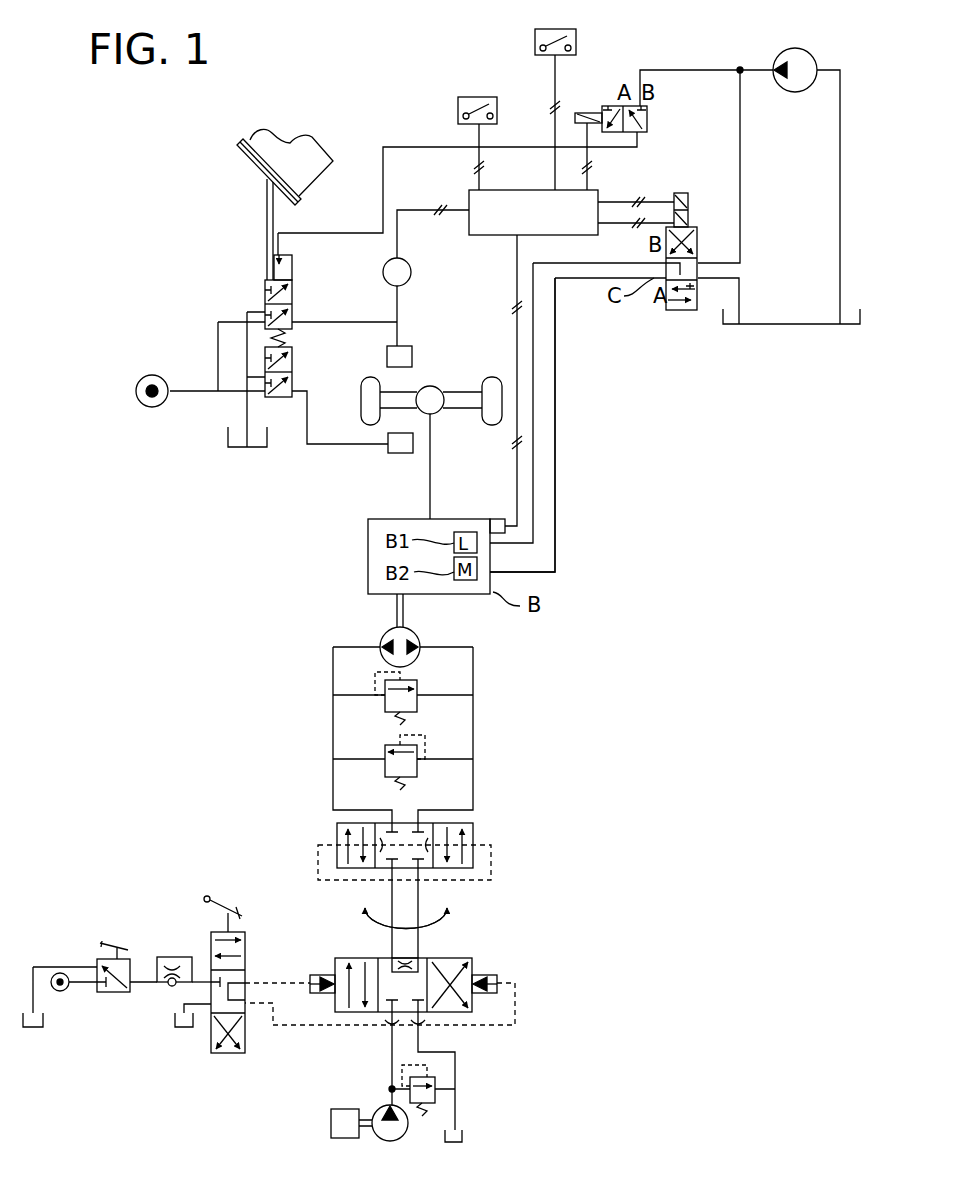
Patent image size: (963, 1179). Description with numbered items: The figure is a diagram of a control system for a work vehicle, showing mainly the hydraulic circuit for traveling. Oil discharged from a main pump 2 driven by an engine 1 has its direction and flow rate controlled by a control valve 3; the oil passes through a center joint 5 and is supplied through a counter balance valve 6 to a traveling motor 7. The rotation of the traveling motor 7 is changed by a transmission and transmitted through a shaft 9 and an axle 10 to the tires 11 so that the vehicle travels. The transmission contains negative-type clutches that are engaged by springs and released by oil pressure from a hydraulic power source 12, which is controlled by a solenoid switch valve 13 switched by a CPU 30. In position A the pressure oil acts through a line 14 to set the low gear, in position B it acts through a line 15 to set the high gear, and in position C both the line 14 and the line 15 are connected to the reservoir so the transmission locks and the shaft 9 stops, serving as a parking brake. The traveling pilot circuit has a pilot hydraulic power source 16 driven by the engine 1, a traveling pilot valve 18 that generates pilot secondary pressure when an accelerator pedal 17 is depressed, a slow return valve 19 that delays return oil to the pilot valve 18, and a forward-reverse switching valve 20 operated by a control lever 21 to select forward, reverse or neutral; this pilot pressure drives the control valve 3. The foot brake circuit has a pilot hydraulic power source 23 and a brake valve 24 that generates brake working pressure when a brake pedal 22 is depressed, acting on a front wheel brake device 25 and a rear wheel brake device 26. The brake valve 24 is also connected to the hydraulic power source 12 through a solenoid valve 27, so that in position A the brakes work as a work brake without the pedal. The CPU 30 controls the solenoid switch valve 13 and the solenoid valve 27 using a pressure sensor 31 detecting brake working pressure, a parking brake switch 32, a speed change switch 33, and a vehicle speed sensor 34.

The engine 1 is at (335, 1109).
The main pump 2 is at (378, 1110).
The control valve 3 is at (466, 1012).
The center joint 5 is at (362, 908).
The counter balance valve 6 is at (337, 832).
The traveling motor 7 is at (383, 637).
The shaft 9 is at (430, 467).
The axle 10 is at (437, 386).
The tires 11 is at (490, 426).
The hydraulic power source 12 is at (783, 55).
The solenoid switch valve 13 is at (682, 313).
The line 14 is at (535, 445).
The line 15 is at (557, 496).
The pilot hydraulic power source 16 is at (60, 991).
The accelerator pedal 17 is at (114, 946).
The traveling pilot valve 18 is at (122, 992).
The slow return valve 19 is at (190, 956).
The forward-reverse switching valve 20 is at (246, 1040).
The control lever 21 is at (230, 908).
The brake pedal 22 is at (242, 150).
The pilot hydraulic power source 23 is at (168, 376).
The brake valve 24 is at (265, 296).
The front wheel brake device 25 is at (412, 352).
The rear wheel brake device 26 is at (388, 440).
The solenoid valve 27 is at (647, 137).
The CPU 30 is at (509, 190).
The pressure sensor 31 is at (411, 274).
The parking brake switch 32 is at (458, 100).
The speed change switch 33 is at (535, 34).
The vehicle speed sensor 34 is at (494, 516).